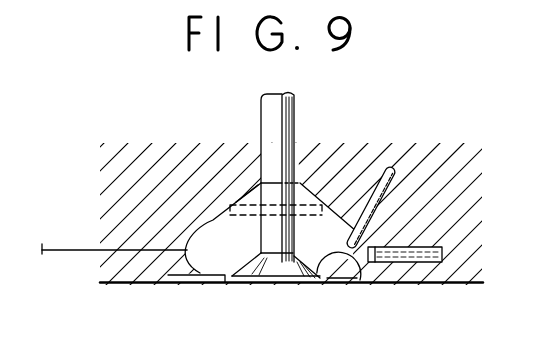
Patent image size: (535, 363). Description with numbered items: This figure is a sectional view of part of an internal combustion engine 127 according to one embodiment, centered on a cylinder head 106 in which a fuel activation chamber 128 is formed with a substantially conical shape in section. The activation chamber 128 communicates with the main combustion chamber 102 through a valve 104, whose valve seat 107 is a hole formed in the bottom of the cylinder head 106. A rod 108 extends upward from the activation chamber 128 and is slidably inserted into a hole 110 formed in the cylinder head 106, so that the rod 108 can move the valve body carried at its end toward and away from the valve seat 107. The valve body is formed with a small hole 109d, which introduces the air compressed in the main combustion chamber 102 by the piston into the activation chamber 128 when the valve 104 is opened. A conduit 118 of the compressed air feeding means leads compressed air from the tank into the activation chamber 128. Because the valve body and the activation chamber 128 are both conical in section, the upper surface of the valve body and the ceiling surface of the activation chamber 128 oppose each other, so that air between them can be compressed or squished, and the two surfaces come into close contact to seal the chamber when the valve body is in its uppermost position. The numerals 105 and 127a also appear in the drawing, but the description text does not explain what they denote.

The main combustion chamber 102 is at (178, 322).
The valve 104 is at (391, 167).
The terminal pin 105 is at (446, 247).
The cylinder head 106 is at (121, 165).
The valve seat 107 is at (236, 286).
The rod 108 is at (292, 110).
The small hole 109d is at (288, 288).
The hole 110 is at (262, 158).
The conduit 118 is at (68, 249).
The internal combustion engine 127 is at (163, 130).
The shoulder of seal member 127a is at (253, 188).
The fuel activation chamber 128 is at (305, 182).